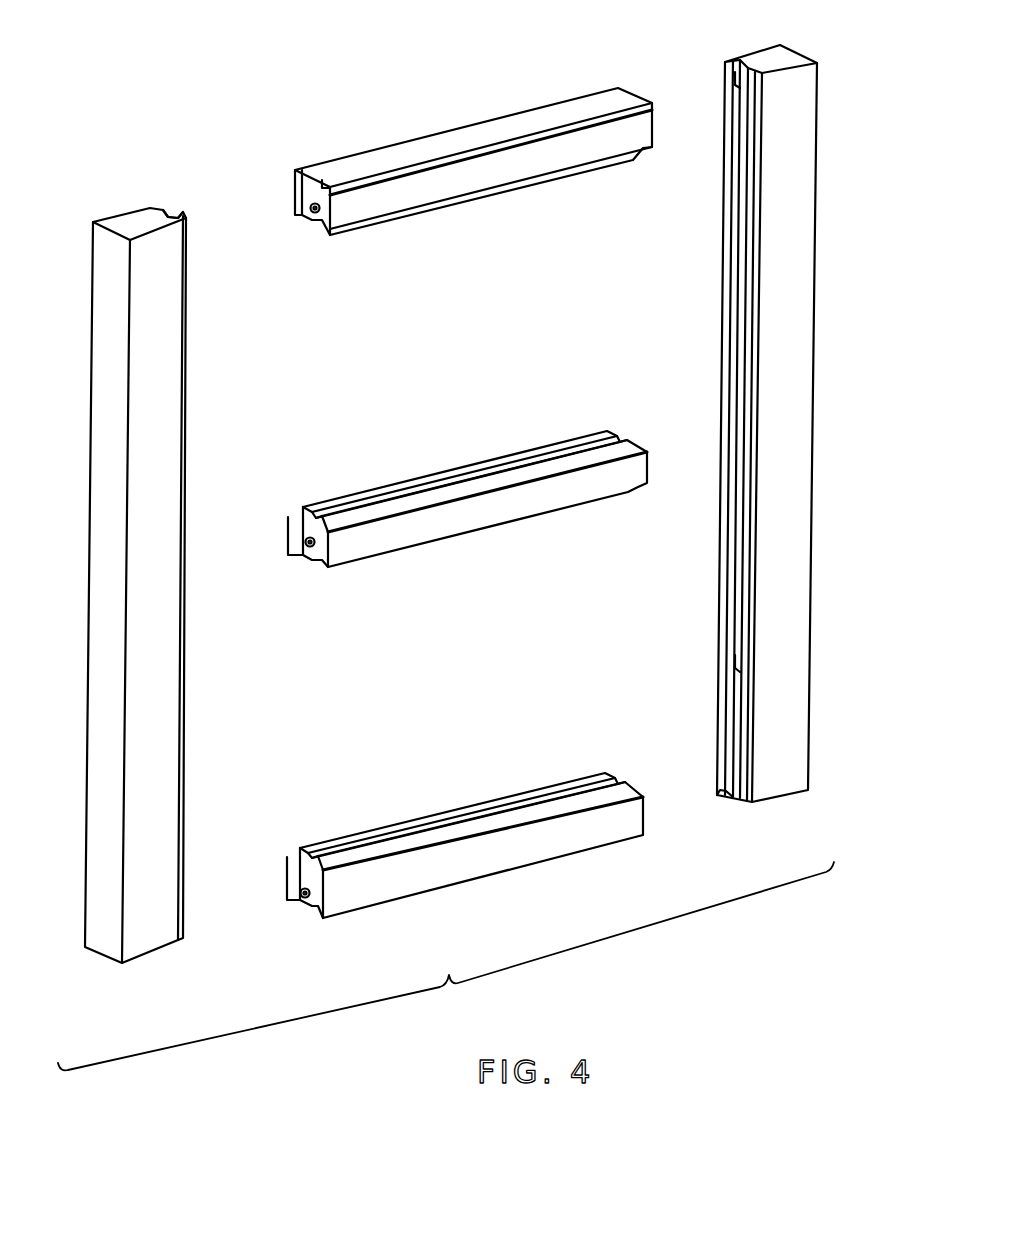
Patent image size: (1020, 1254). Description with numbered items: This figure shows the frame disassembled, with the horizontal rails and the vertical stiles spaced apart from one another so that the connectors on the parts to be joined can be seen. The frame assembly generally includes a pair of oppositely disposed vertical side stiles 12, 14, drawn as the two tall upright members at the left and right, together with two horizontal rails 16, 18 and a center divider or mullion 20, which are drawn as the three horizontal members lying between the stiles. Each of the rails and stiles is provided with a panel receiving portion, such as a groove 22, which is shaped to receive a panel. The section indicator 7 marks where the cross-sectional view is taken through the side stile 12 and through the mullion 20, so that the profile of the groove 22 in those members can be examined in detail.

The vertical side stile 12 is at (103, 740).
The vertical side stile 14 is at (800, 455).
The horizontal rail 16 is at (545, 845).
The horizontal rail 18 is at (470, 133).
The center divider or mullion 20 is at (503, 513).
The groove 22 is at (170, 213).
The section line 7- 7 is at (75, 603).